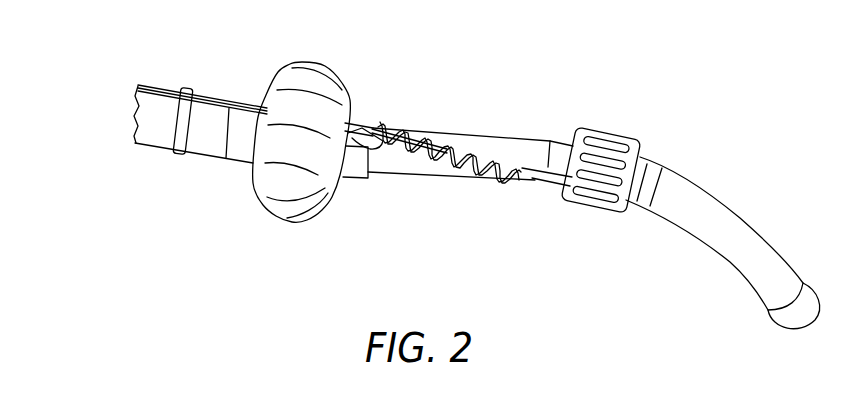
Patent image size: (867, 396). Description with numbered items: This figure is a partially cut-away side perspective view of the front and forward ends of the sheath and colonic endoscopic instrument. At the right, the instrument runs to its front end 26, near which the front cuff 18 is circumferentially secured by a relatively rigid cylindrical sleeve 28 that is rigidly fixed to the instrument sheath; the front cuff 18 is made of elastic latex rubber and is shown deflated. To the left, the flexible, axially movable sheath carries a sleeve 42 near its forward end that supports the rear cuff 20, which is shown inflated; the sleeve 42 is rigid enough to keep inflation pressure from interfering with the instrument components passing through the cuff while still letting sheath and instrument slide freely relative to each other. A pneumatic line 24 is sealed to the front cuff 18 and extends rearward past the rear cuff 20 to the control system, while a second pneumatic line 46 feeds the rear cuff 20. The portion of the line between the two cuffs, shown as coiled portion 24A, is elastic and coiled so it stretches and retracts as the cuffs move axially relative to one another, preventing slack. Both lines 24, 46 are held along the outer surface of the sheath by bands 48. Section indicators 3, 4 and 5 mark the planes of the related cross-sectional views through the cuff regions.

The front cuff 18 is at (594, 206).
The rear cuff 20 is at (328, 73).
The pneumatic line 24 is at (213, 150).
The coiled portion of the pneumatic line 24A is at (463, 177).
The front end 26 is at (763, 247).
The cylindrical sleeve 28 is at (655, 170).
The sleeve 42 is at (352, 167).
The second pneumatic line 46 is at (212, 101).
The bands 48 is at (176, 148).
The section line 3 is at (523, 185).
The section line 4 is at (135, 88).
The section line 5 is at (78, 55).